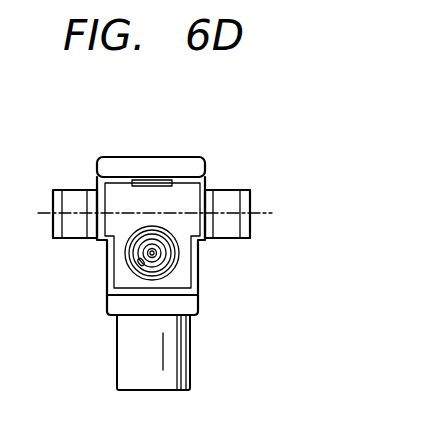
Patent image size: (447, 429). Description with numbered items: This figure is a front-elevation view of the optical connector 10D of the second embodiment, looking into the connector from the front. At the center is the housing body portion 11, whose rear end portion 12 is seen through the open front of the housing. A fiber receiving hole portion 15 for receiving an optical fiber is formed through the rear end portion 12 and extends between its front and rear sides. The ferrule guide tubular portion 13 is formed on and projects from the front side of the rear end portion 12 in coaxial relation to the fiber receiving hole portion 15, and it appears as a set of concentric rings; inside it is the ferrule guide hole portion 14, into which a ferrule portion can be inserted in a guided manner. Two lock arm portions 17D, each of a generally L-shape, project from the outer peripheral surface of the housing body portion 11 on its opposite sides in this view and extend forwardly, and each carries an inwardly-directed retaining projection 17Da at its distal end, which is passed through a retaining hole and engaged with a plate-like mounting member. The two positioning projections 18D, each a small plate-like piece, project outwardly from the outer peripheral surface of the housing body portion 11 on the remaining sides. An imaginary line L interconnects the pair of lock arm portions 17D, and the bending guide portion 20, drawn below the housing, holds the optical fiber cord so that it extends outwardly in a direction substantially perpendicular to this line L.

The optical connector 10D is at (223, 122).
The housing body portion 11 is at (200, 255).
The rear end portion 12 is at (183, 277).
The ferrule guide tubular portion 13 is at (125, 248).
The ferrule guide hole portion 14 is at (128, 263).
The fiber receiving hole portion 15 is at (153, 253).
The lock arm portion 17D is at (57, 188).
The retaining projection 17Da is at (73, 193).
The positioning projection 18D is at (148, 157).
The bending guide portion 20 is at (188, 368).
The imaginary line L is at (163, 215).